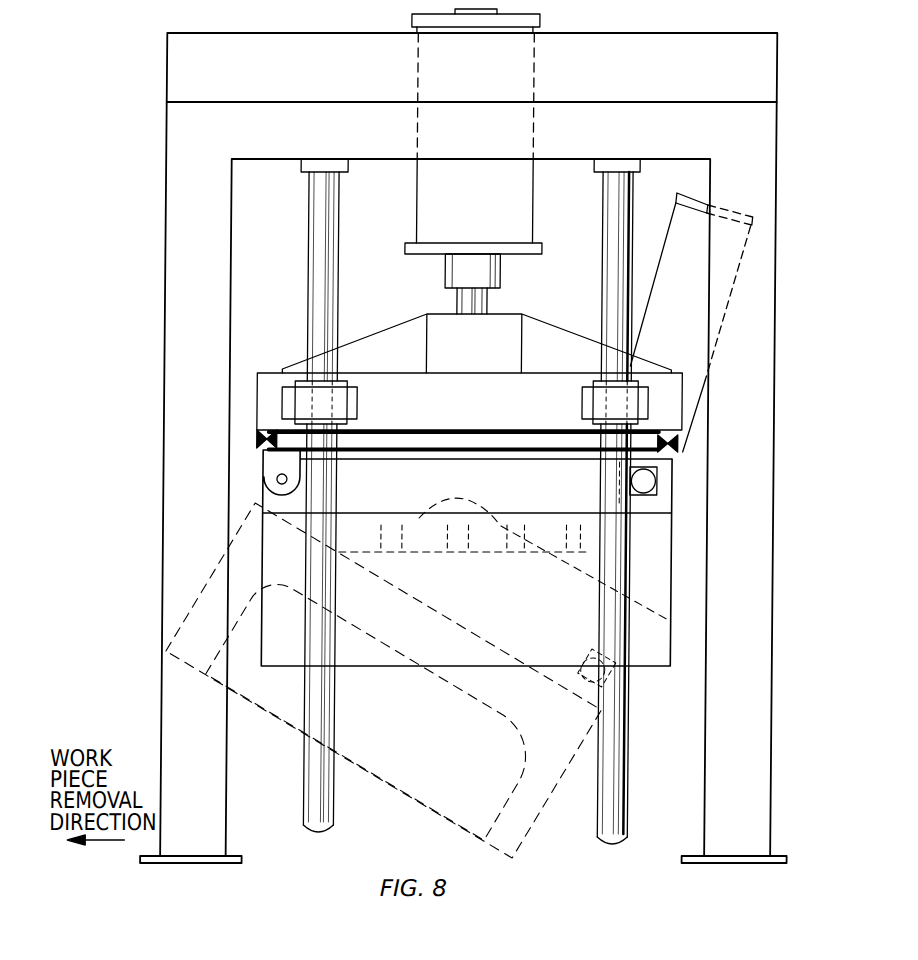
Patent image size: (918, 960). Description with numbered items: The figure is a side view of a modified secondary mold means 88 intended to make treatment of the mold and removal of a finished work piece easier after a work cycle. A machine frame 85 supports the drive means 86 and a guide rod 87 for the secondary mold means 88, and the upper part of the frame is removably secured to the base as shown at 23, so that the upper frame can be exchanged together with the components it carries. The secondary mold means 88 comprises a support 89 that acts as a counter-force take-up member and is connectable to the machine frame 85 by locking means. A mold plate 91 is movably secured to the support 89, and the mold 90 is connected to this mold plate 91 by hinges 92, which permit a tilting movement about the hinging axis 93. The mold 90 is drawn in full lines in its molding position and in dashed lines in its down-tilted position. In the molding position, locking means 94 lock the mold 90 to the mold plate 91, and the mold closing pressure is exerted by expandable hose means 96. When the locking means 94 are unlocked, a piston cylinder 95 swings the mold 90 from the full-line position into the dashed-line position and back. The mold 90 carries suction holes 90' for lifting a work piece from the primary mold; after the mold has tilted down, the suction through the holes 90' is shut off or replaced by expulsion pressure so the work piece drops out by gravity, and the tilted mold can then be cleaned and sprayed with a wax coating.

The removable securing connection 23 is at (240, 853).
The machine frame 85 is at (769, 408).
The drive means 86 is at (527, 200).
The guide rod 87 is at (332, 273).
The secondary mold means 88 is at (656, 699).
The support 89 is at (273, 381).
The mold 90 is at (485, 559).
The suction holes 90' is at (503, 549).
The mold plate 91 is at (671, 455).
The hinges 92 is at (264, 463).
The hinging axis 93 is at (278, 478).
The locking means 94 is at (655, 494).
The piston cylinder 95 is at (664, 265).
The expandable hose means 96 is at (485, 438).